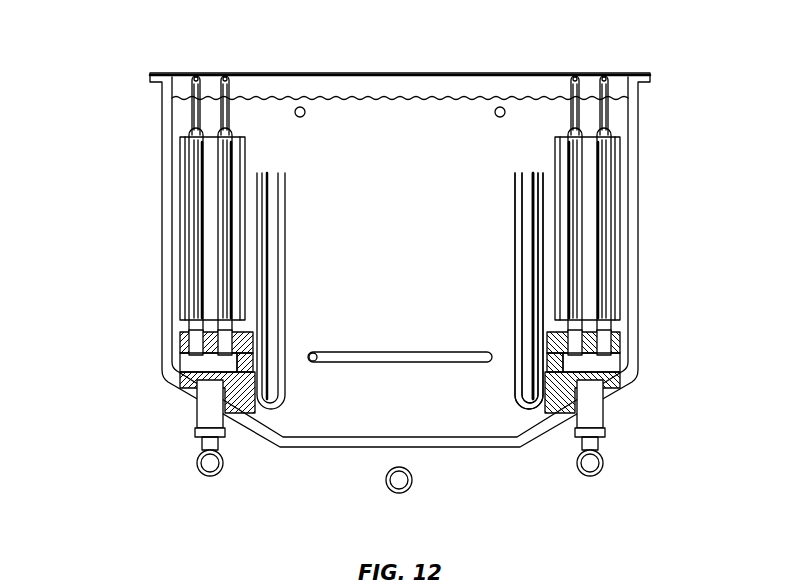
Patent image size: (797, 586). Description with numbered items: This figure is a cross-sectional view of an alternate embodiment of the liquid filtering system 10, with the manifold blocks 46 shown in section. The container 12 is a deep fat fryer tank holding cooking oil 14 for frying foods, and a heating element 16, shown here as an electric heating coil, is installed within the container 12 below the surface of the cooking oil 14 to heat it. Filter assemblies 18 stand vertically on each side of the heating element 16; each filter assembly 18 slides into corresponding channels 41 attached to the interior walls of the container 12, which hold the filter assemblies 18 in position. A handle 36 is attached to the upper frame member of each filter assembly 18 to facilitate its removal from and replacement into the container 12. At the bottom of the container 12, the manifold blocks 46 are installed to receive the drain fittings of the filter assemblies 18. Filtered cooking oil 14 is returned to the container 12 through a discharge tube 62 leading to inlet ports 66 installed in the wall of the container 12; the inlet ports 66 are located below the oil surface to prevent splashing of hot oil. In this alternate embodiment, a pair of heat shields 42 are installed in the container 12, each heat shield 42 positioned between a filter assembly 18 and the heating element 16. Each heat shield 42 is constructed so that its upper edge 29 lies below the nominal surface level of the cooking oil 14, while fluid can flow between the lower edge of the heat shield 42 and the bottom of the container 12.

The liquid filtering system 10 is at (105, 42).
The container 12 is at (638, 175).
The cooking oil 14 is at (378, 96).
The heating element 16 is at (437, 348).
The filter assembly 18 is at (225, 215).
The upper edge 29 is at (533, 172).
The handle 36 is at (218, 78).
The channel 41 is at (182, 203).
The heat shield 42 is at (270, 232).
The manifold block 46 is at (170, 383).
The discharge tube 62 is at (397, 493).
The inlet port 66 is at (308, 116).